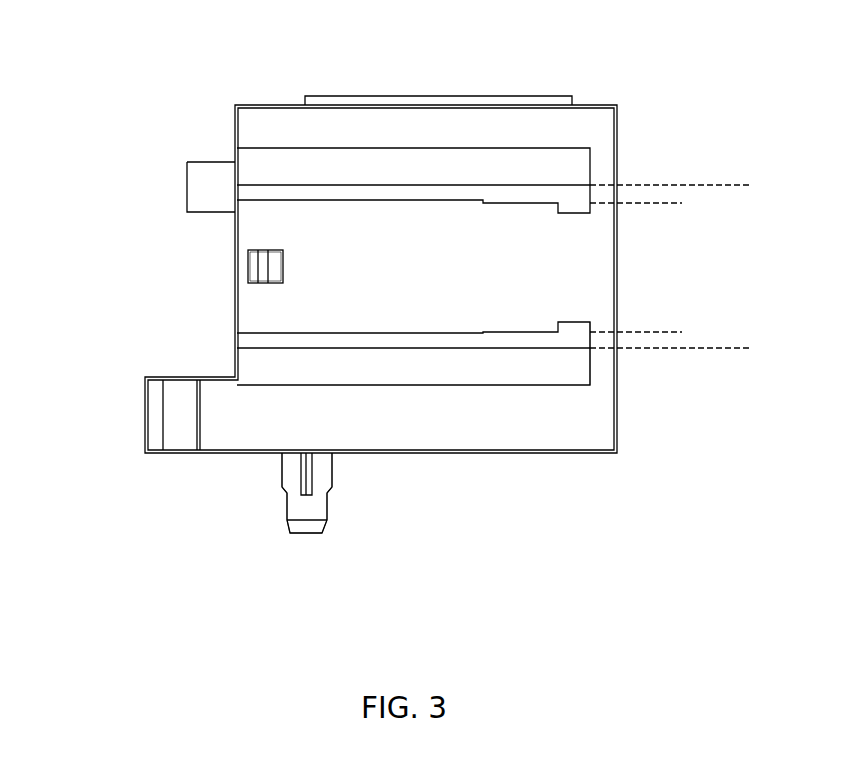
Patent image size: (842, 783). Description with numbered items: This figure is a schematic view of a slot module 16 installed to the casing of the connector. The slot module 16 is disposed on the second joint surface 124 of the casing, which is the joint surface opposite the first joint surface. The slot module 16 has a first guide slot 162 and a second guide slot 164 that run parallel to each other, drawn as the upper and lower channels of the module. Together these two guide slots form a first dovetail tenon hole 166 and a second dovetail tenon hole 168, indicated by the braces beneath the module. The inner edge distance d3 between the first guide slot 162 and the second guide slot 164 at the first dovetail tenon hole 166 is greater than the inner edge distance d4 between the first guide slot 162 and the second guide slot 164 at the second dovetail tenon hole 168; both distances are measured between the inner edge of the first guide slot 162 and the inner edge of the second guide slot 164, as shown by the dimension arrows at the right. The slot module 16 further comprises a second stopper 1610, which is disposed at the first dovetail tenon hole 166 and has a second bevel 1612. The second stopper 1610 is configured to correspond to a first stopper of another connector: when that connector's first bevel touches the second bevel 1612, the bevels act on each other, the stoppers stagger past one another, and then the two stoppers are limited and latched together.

The slot module 16 is at (87, 152).
The second joint surface 124 is at (381, 122).
The first guide slot 162 is at (248, 173).
The second guide slot 164 is at (248, 360).
The first dovetail tenon hole 166 is at (240, 553).
The second dovetail tenon hole 168 is at (488, 553).
The second stopper 1610 is at (299, 263).
The second bevel 1612 is at (258, 265).
The inner edge distance d3 is at (728, 192).
The inner edge distance d4 is at (655, 210).